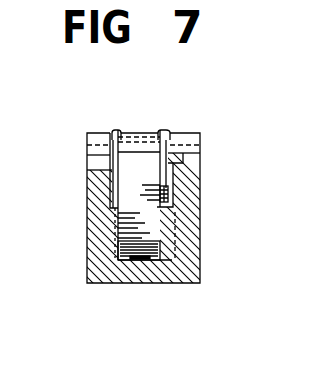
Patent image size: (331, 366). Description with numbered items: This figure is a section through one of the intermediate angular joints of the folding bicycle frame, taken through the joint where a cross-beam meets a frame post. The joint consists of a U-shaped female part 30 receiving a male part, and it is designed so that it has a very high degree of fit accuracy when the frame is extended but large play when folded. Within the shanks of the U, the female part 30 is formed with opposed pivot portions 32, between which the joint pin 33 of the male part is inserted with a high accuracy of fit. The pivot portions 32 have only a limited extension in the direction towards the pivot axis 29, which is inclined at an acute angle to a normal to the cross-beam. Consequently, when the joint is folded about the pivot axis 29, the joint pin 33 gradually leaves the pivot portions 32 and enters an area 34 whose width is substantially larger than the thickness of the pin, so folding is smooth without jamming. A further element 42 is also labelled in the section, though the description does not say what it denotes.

The pivot axis 29 is at (165, 165).
The U-shaped female part 30 is at (183, 263).
The pivot portion 32 is at (160, 256).
The joint pin 33 is at (162, 200).
The area of larger play 34 is at (125, 189).
The bore wall 42 is at (113, 213).